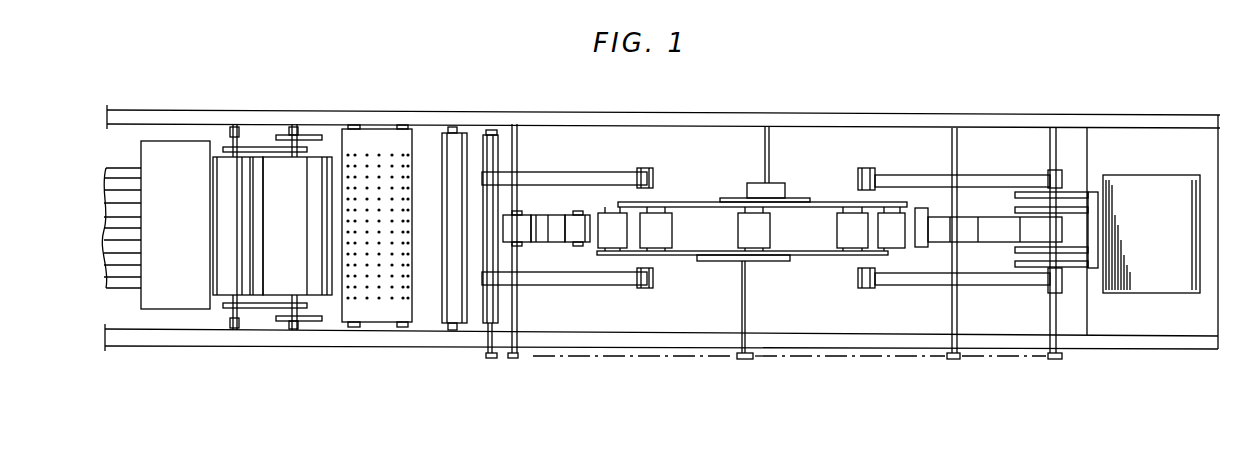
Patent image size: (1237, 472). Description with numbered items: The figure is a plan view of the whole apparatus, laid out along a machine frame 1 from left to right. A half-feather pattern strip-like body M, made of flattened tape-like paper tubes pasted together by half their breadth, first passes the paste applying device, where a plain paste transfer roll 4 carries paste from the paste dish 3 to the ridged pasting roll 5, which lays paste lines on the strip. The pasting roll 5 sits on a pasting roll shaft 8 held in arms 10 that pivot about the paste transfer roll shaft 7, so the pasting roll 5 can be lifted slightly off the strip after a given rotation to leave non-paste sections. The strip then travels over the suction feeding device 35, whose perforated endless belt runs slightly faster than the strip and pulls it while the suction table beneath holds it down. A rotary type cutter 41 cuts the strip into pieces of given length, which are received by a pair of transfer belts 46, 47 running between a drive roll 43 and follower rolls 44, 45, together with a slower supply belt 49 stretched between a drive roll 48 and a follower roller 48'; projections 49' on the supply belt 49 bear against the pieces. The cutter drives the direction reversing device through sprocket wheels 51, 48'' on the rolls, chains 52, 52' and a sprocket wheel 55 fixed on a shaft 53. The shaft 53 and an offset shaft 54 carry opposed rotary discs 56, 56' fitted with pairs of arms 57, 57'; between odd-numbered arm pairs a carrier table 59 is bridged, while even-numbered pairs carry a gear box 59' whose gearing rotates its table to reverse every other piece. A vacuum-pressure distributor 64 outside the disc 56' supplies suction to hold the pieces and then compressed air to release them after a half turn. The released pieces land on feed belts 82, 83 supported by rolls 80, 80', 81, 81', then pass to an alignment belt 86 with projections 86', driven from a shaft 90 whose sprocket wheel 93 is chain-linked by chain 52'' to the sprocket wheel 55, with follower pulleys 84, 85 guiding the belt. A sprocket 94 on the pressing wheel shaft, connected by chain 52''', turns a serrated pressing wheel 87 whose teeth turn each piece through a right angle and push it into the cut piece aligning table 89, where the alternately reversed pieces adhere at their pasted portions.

The half-feather pattern strip-like body M is at (121, 167).
The machine frame 1 is at (183, 110).
The paste dish 3 is at (157, 300).
The paste transfer roll 4 is at (227, 283).
The pasting roll 5 is at (320, 283).
The paste transfer roll shaft 7 is at (238, 132).
The pasting roll shaft 8 is at (300, 132).
The arms 10 is at (268, 146).
The suction feeding device 35 is at (382, 312).
The rotary type cutter 41 is at (447, 313).
The drive roll 43 is at (488, 310).
The follower roll 44 is at (642, 295).
The follower roll 45 is at (642, 170).
The transfer belt 46 is at (612, 285).
The transfer belt 47 is at (567, 178).
The drive roll 48 is at (525, 264).
The follower roller 48' is at (586, 264).
The sprocket wheel 48'' is at (542, 263).
The supply belt 49 is at (542, 190).
The projections 49' is at (557, 270).
The sprocket wheel 51 is at (491, 358).
The chain 52 is at (507, 380).
The chain 52' is at (634, 379).
The chain 52'' is at (850, 379).
The chain 52''' is at (1004, 384).
The shaft 53 is at (744, 323).
The shaft 54 is at (769, 155).
The sprocket wheel 55 is at (747, 360).
The rotary disc 56 is at (759, 276).
The rotary disc 56' is at (787, 183).
The arms 57 is at (742, 278).
The arms 57' is at (762, 184).
The carrier table 59 is at (656, 229).
The gear box 59' is at (779, 229).
The vacuum-pressure distributor 64 is at (780, 183).
The roll 80 is at (1037, 300).
The roll 80' is at (848, 297).
The roll 81 is at (1069, 135).
The roll 81' is at (883, 160).
The feed belt 82 is at (960, 285).
The feed belt 83 is at (935, 178).
The follower pulley 84 is at (923, 248).
The follower pulley 85 is at (1053, 248).
The alignment belt 86 is at (995, 216).
The projection 86' is at (1002, 267).
The serrated pressing wheel 87 is at (1077, 190).
The cut piece aligning table 89 is at (1173, 325).
The shaft 90 is at (950, 318).
The sprocket wheel 93 is at (957, 360).
The sprocket 94 is at (1055, 362).